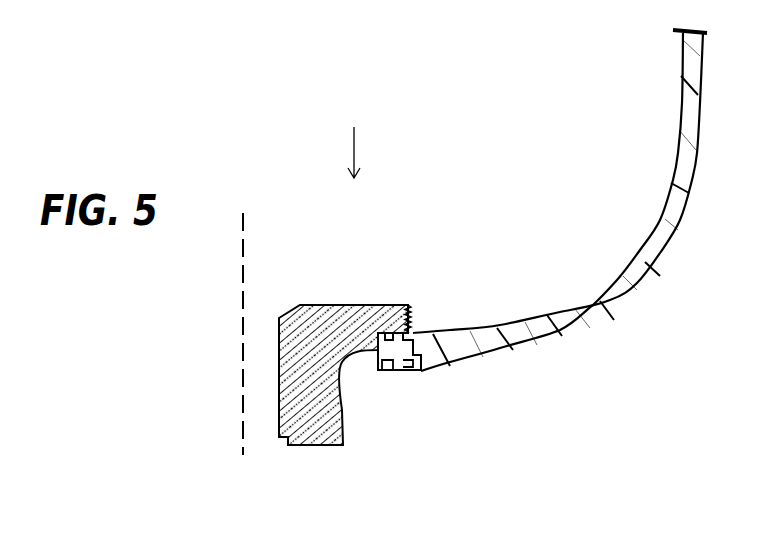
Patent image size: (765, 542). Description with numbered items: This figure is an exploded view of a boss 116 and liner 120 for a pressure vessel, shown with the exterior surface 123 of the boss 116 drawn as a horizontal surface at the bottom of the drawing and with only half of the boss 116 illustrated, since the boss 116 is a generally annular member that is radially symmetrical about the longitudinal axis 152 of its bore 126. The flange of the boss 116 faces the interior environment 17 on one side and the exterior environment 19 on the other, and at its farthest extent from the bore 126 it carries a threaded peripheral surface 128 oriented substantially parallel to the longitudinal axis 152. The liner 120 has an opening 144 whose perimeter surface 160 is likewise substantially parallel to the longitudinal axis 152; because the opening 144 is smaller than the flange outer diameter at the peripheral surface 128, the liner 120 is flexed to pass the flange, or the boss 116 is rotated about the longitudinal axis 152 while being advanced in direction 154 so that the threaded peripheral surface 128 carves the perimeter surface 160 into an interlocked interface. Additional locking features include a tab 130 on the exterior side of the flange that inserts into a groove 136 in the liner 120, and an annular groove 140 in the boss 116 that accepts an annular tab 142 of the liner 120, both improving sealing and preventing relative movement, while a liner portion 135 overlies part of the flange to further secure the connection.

The boss 116 is at (296, 406).
The liner 120 is at (583, 315).
The exterior surface 123 is at (303, 447).
The bore 126 is at (280, 350).
The peripheral surface 128 is at (414, 334).
The tab 130 is at (388, 333).
The liner portion 135 is at (397, 375).
The groove 136 is at (387, 363).
The annular groove 140 is at (372, 350).
The annular tab 142 is at (381, 378).
The opening 144 is at (364, 390).
The longitudinal axis 152 is at (242, 290).
The direction 154 is at (355, 157).
The perimeter surface 160 is at (414, 334).
The interior environment 17 is at (512, 134).
The exterior environment 19 is at (640, 450).